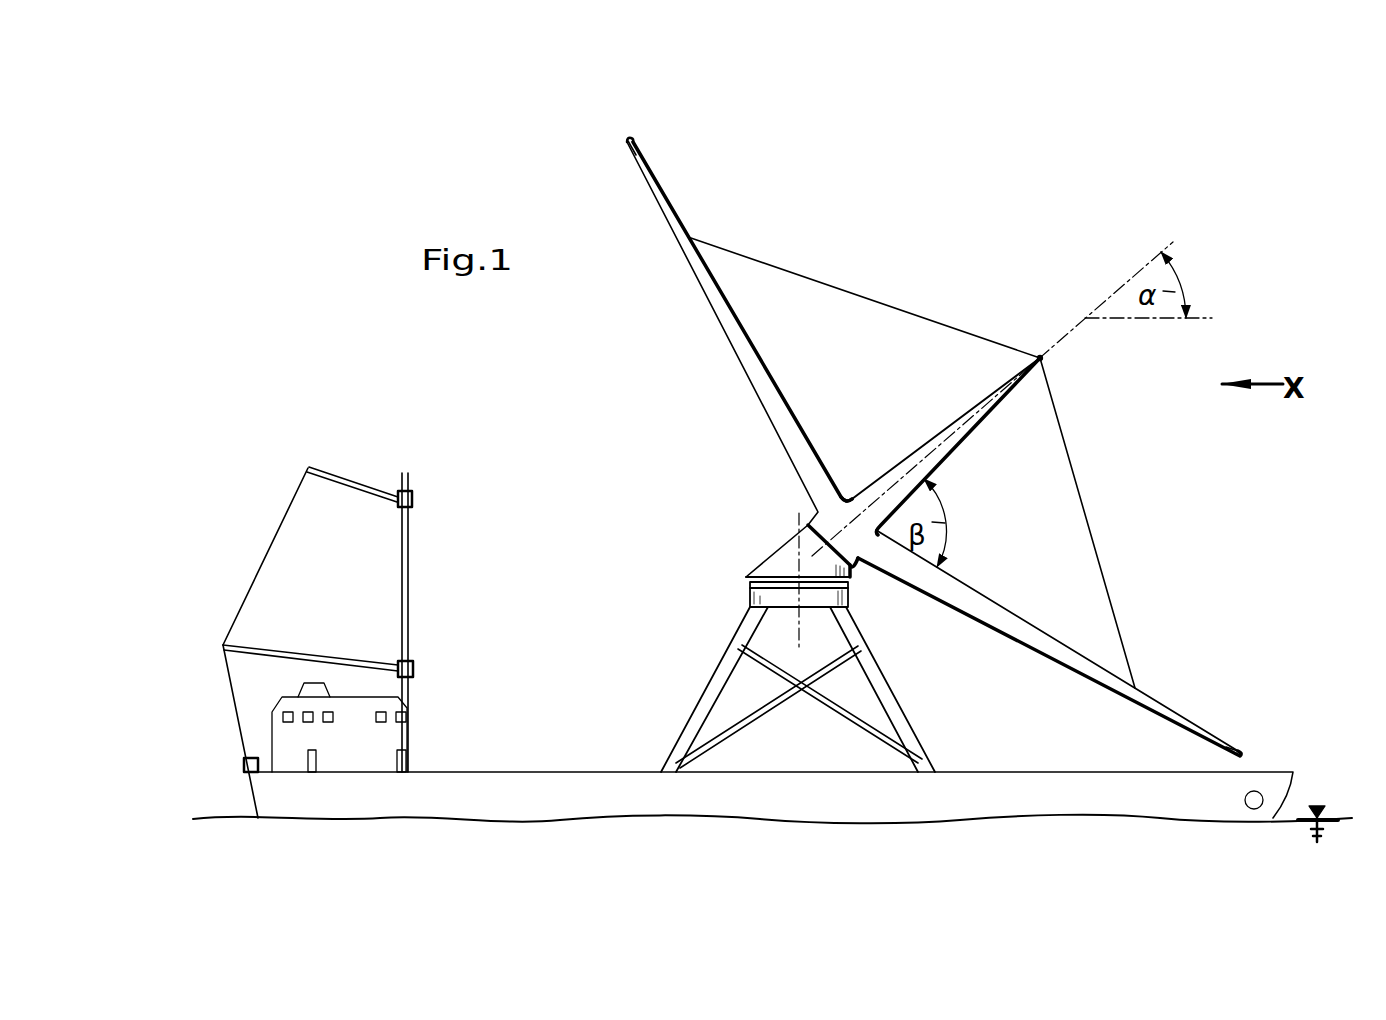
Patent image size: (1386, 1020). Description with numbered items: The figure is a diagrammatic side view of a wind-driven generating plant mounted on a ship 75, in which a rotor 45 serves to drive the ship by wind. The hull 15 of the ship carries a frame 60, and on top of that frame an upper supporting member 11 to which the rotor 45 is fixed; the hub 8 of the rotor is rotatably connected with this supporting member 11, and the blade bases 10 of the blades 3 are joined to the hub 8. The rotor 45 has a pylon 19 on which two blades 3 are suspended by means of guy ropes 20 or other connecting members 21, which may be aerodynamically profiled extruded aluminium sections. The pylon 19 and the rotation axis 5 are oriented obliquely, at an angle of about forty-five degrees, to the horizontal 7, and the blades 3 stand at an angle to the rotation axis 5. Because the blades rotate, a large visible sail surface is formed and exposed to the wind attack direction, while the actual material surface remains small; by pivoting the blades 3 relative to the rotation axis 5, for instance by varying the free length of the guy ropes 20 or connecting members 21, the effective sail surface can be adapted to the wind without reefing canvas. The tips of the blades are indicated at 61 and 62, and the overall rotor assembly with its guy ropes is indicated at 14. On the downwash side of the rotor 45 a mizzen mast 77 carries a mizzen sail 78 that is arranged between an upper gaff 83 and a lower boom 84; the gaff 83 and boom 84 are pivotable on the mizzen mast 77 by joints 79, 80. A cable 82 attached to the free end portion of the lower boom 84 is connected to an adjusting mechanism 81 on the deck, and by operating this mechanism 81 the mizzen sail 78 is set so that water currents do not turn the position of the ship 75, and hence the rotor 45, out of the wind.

The blades 3 is at (744, 354).
The rotation axis 5 is at (1058, 334).
The horizontal 7 is at (1210, 320).
The hub 8 is at (766, 532).
The blade bases 10 is at (840, 470).
The upper supporting member 11 is at (742, 580).
The crane frame 14 is at (1115, 523).
The hull 15 is at (507, 779).
The pylon 19 is at (928, 437).
The guy ropes 20 is at (1100, 523).
The connecting members 21 is at (1063, 447).
The rotor 45 is at (930, 275).
The frame 60 is at (727, 656).
The upper boom tip 61 is at (641, 140).
The lower boom tip 62 is at (1242, 746).
The ship 75 is at (772, 715).
The mizzen mast 77 is at (411, 559).
The mizzen sail 78 is at (306, 481).
The joint 79 is at (413, 499).
The joint 80 is at (411, 681).
The adjusting mechanism 81 is at (243, 765).
The cable 82 is at (233, 690).
The upper gaff 83 is at (356, 479).
The lower boom 84 is at (300, 651).